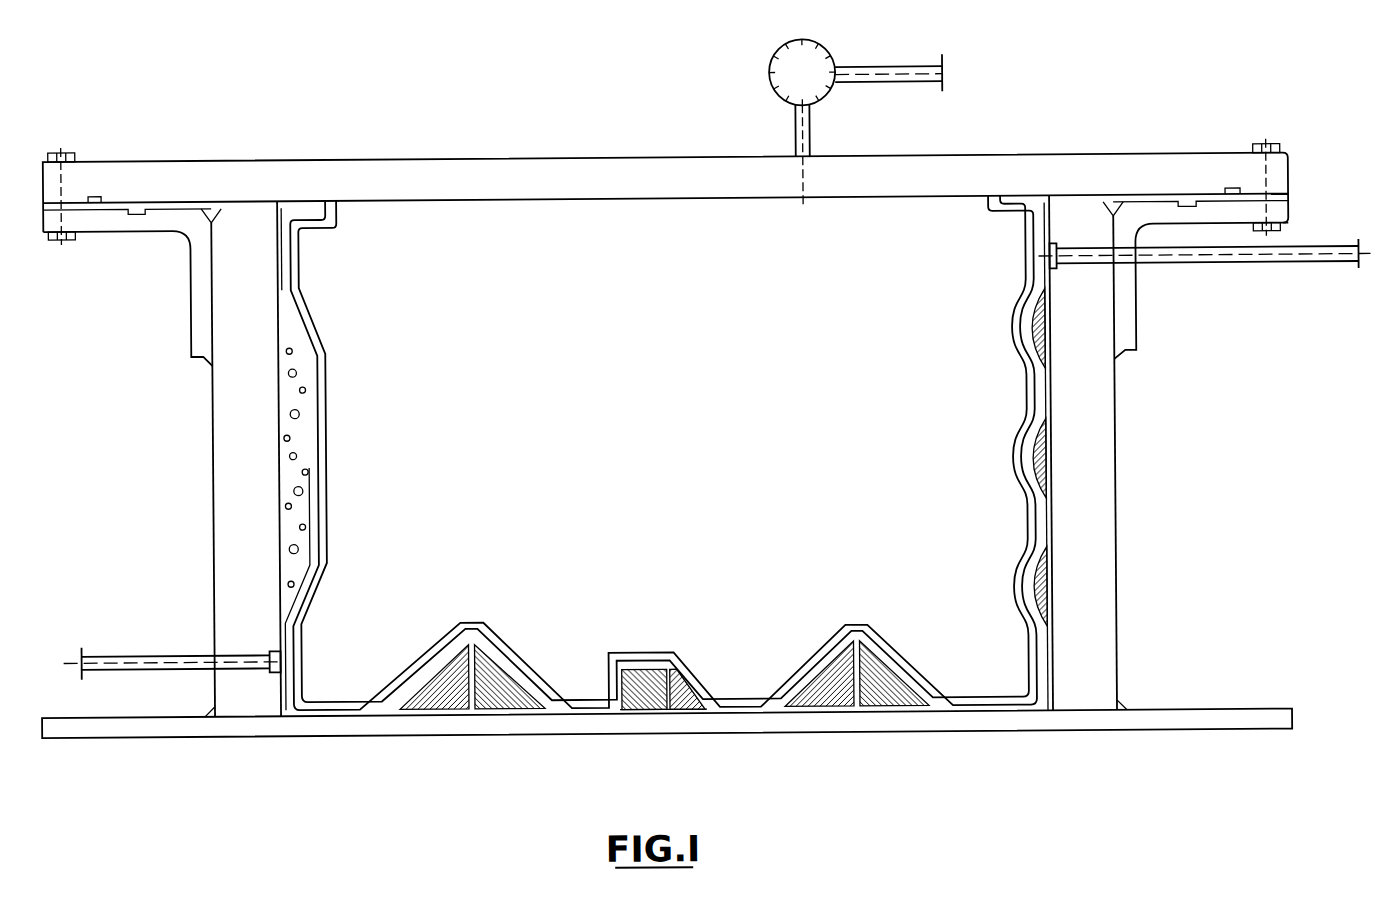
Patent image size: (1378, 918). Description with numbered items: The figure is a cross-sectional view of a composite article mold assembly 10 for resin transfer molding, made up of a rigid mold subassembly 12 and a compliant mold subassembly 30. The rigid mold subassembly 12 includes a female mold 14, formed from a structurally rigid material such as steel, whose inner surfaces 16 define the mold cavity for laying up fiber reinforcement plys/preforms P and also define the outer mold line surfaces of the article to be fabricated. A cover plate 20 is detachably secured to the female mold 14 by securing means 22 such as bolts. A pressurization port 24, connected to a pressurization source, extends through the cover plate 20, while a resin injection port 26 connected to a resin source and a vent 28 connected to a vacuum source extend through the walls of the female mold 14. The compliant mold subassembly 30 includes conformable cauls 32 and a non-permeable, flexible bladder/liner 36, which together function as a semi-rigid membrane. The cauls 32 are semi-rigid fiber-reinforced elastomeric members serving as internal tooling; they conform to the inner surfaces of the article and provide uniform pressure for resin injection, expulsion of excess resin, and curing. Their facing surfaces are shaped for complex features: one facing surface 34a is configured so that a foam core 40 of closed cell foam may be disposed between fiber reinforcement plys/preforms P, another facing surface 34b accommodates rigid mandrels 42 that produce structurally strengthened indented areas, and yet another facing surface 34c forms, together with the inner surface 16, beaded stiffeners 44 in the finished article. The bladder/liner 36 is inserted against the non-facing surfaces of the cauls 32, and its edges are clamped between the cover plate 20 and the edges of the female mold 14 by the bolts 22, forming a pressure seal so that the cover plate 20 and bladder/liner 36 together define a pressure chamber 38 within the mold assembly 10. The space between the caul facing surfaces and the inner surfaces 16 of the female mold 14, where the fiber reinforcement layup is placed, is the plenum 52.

The mold assembly 10 is at (420, 71).
The rigid mold subassembly 12 is at (178, 344).
The female mold 14 is at (212, 471).
The inner surfaces 16 is at (278, 535).
The cover plate 20 is at (1145, 160).
The securing means 22 is at (50, 152).
The pressurization port 24 is at (946, 80).
The resin injection port 26 is at (142, 656).
The vent 28 is at (1250, 272).
The compliant mold subassembly 30 is at (358, 573).
The conformable cauls 32 is at (318, 472).
The facing surface 34a is at (305, 515).
The facing surface 34b is at (896, 666).
The facing surface 34c is at (1033, 331).
The bladder/liner 36 is at (413, 671).
The pressure chamber 38 is at (672, 370).
The foam core 40 is at (298, 375).
The rigid mandrels 42 is at (481, 651).
The beaded stiffeners 44 is at (1030, 444).
The plenum 52 is at (1050, 636).
The fiber reinforcement plys/preforms P is at (281, 324).